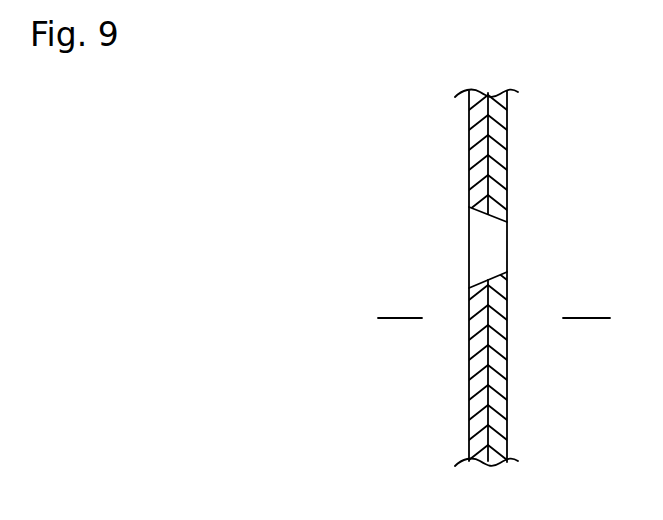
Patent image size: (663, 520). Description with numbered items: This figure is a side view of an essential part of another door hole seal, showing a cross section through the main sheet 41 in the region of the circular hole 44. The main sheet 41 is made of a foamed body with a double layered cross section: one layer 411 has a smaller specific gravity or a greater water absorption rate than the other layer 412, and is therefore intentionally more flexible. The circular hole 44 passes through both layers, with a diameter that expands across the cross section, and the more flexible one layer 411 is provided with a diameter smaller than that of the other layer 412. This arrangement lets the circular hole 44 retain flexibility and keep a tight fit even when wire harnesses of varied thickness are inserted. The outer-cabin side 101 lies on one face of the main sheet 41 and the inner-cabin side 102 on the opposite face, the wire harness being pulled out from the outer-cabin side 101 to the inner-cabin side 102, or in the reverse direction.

The main sheet 41 is at (498, 131).
The circular hole 44 is at (468, 220).
The one layer 411 is at (498, 403).
The other layer 412 is at (475, 433).
The outer-cabin side 101 is at (400, 304).
The inner-cabin side 102 is at (586, 304).